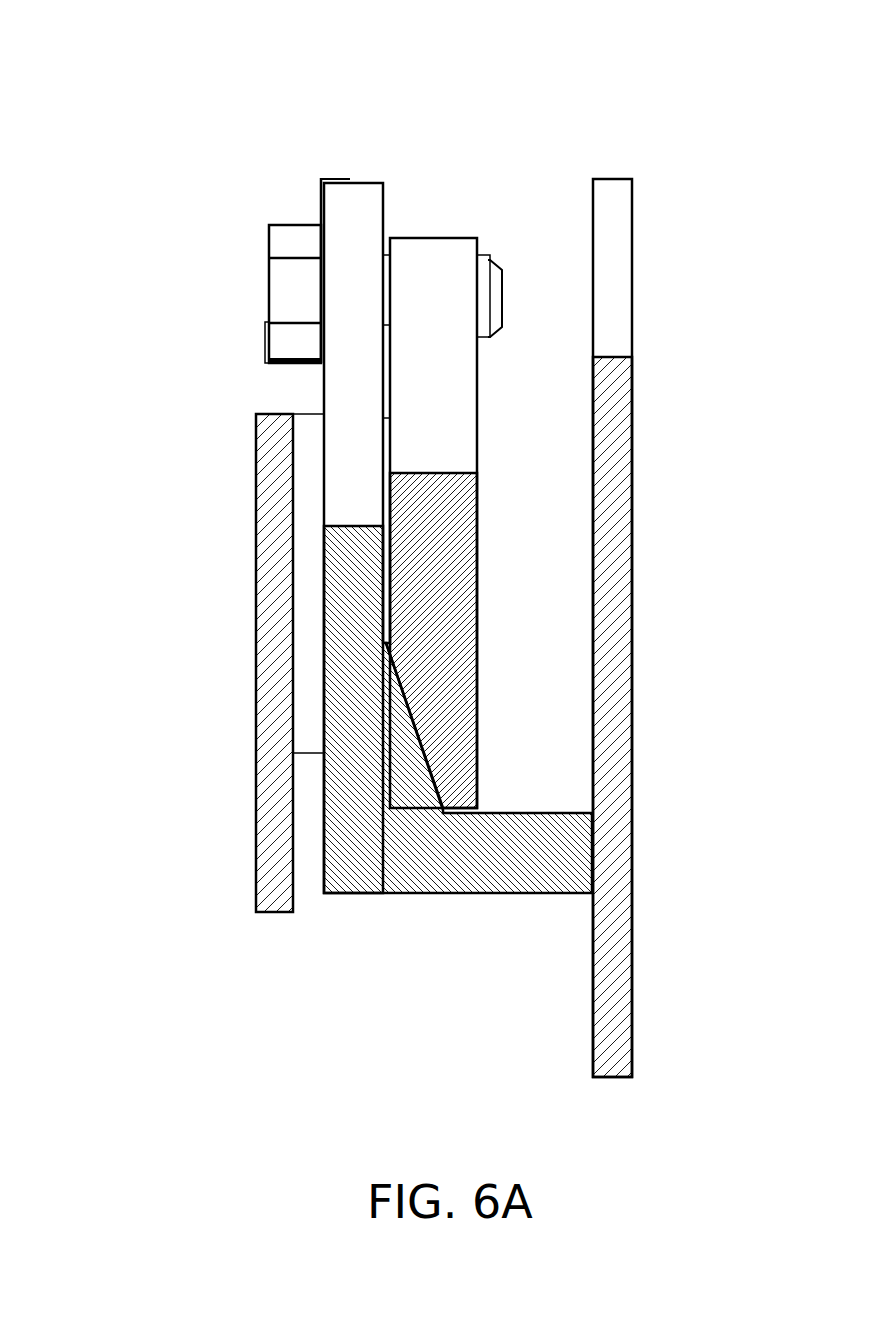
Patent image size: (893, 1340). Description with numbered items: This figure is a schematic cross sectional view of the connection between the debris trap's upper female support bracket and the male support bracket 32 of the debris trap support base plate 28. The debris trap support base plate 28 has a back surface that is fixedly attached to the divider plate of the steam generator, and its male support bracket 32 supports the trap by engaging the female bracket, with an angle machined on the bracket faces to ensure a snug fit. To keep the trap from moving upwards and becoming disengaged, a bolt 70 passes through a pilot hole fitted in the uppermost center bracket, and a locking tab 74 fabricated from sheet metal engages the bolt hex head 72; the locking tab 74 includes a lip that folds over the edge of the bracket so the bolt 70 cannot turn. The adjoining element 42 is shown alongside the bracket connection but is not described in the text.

The debris trap support base plate 28 is at (612, 723).
The male support bracket 32 is at (407, 894).
The panel 42 is at (267, 617).
The bolt 70 is at (537, 240).
The bolt hex head 72 is at (277, 261).
The locking tab 74 is at (300, 180).